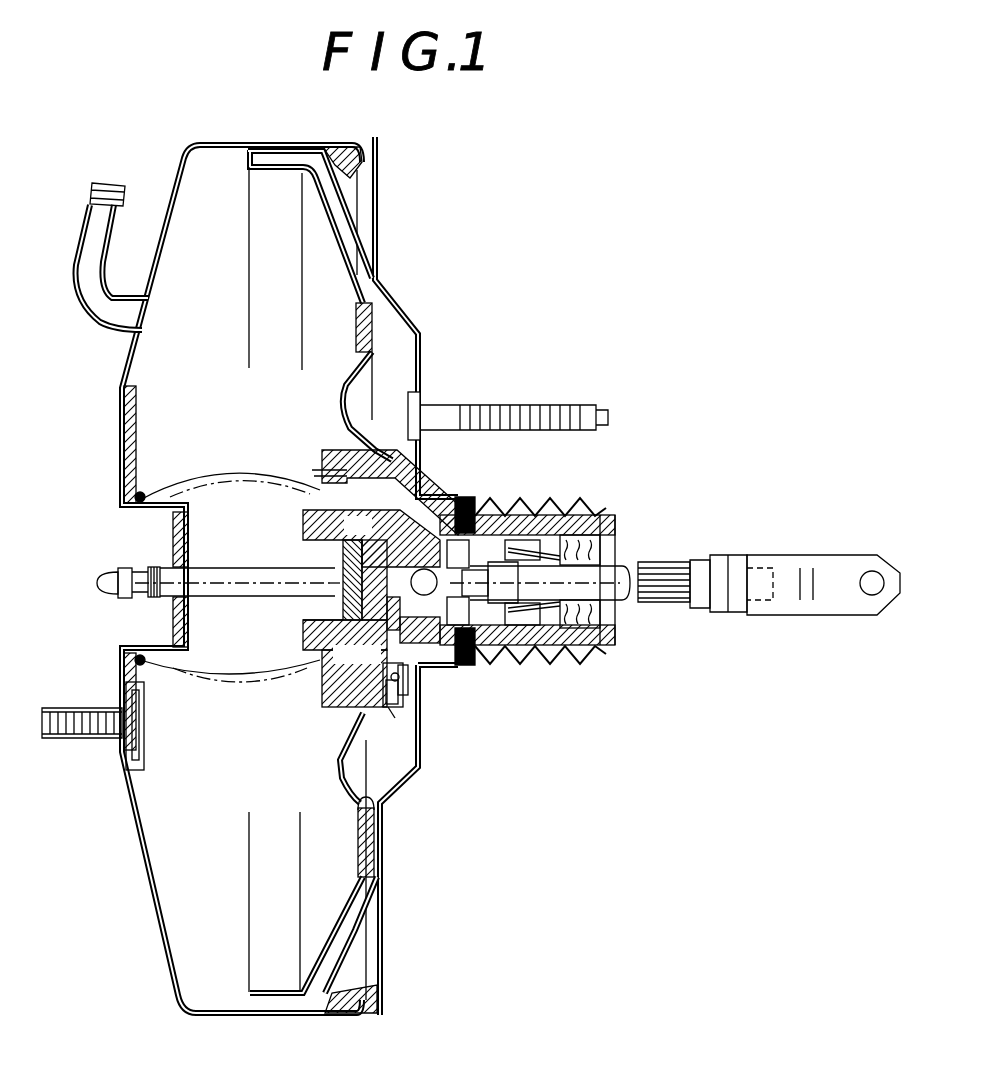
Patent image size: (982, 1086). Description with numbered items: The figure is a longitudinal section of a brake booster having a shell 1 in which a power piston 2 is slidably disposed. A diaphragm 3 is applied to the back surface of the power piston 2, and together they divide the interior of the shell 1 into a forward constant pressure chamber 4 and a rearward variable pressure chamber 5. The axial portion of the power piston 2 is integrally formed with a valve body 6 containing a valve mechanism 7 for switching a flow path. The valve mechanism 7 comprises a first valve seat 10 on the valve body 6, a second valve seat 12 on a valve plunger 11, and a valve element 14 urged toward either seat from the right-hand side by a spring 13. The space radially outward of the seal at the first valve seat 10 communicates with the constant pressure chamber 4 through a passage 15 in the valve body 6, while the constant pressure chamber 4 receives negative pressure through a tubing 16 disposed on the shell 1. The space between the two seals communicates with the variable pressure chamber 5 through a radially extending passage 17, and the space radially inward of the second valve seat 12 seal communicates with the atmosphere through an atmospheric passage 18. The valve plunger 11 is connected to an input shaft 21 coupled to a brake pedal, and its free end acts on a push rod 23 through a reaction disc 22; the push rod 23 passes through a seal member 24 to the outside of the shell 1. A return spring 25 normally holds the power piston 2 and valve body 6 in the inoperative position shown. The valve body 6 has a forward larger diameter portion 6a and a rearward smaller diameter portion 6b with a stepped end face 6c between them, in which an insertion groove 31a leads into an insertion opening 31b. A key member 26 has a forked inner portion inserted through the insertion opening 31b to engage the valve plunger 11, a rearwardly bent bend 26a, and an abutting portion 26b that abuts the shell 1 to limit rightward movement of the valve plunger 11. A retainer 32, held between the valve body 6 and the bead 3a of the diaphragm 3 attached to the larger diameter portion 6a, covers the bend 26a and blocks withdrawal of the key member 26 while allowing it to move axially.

The shell 1 is at (383, 855).
The power piston 2 is at (353, 810).
The diaphragm 3 is at (383, 803).
The bead 3a is at (392, 705).
The constant pressure chamber 4 is at (215, 828).
The variable pressure chamber 5 is at (400, 768).
The valve body 6 is at (313, 707).
The larger diameter portion 6a is at (335, 450).
The smaller diameter portion 6b is at (593, 508).
The stepped end face 6c is at (422, 447).
The valve mechanism 7 is at (505, 663).
The first valve seat 10 is at (455, 540).
The valve plunger 11 is at (323, 584).
The second valve seat 12 is at (358, 566).
The spring 13 is at (535, 505).
The valve element 14 is at (472, 510).
The passage 15 is at (312, 470).
The tubing 16 is at (82, 302).
The radially extending passage 17 is at (440, 667).
The atmospheric passage 18 is at (588, 657).
The input shaft 21 is at (634, 600).
The reaction disc 22 is at (307, 567).
The push rod 23 is at (100, 568).
The seal member 24 is at (173, 541).
The return spring 25 is at (121, 472).
The key member 26 is at (408, 700).
The bend 26a is at (395, 652).
The abutting portion 26b is at (410, 675).
The insertion groove 31a is at (317, 685).
The insertion opening 31b is at (303, 633).
The retainer 32 is at (402, 705).